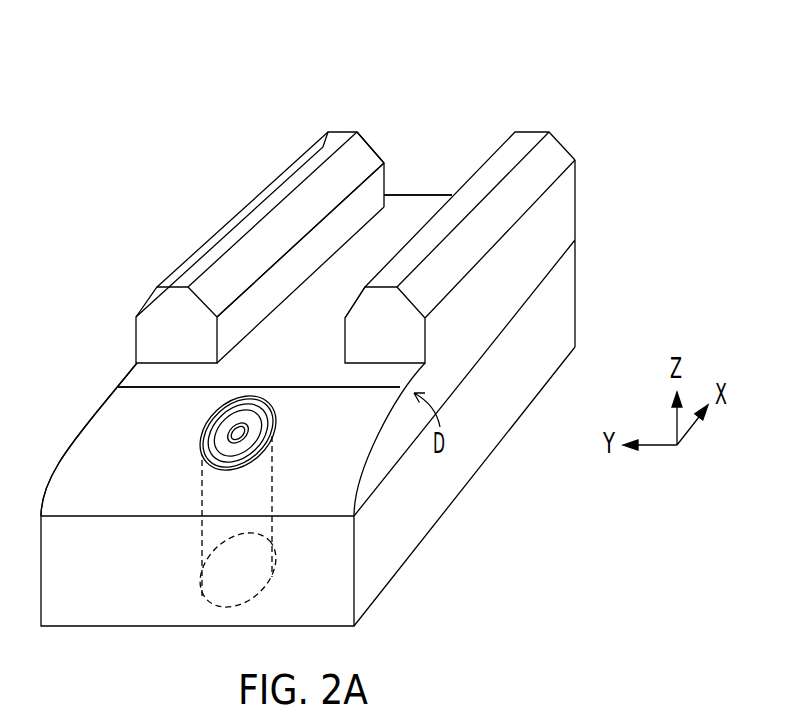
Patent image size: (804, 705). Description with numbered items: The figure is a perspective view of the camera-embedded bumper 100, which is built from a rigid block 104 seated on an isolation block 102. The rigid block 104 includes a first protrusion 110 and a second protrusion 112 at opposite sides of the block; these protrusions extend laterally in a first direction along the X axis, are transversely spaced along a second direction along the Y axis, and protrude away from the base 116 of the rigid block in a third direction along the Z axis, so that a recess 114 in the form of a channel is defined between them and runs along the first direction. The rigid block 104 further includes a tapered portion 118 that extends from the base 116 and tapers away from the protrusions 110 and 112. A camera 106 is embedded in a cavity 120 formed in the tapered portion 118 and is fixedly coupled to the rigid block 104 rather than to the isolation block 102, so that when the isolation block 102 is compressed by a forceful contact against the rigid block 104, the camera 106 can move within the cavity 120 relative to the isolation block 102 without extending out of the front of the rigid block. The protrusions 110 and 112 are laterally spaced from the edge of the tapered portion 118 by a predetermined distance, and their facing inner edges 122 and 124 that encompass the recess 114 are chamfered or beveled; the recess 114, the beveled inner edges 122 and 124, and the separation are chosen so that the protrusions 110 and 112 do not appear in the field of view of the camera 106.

The camera-embedded bumper 100 is at (622, 51).
The isolation block 102 is at (555, 310).
The rigid block 104 is at (561, 205).
The camera 106 is at (265, 432).
The first protrusion 110 is at (520, 140).
The second protrusion 112 is at (318, 148).
The recess 114 is at (410, 200).
The base 116 is at (298, 352).
The tapered portion 118 is at (100, 442).
The cavity 120 is at (280, 487).
The inner edge 122 is at (358, 298).
The inner edge 124 is at (356, 152).